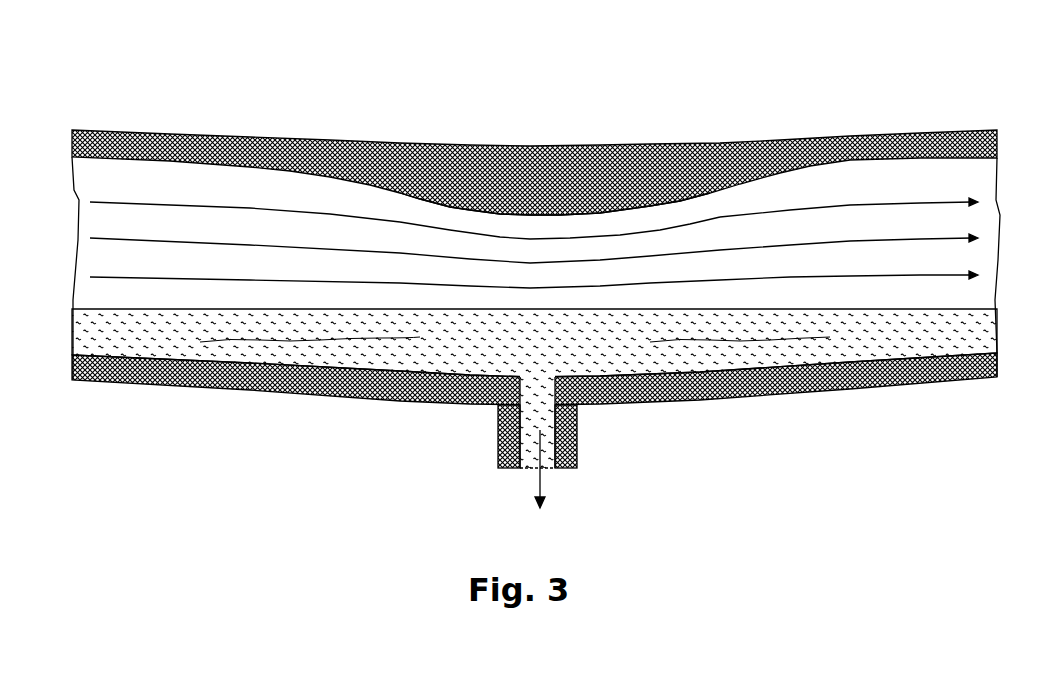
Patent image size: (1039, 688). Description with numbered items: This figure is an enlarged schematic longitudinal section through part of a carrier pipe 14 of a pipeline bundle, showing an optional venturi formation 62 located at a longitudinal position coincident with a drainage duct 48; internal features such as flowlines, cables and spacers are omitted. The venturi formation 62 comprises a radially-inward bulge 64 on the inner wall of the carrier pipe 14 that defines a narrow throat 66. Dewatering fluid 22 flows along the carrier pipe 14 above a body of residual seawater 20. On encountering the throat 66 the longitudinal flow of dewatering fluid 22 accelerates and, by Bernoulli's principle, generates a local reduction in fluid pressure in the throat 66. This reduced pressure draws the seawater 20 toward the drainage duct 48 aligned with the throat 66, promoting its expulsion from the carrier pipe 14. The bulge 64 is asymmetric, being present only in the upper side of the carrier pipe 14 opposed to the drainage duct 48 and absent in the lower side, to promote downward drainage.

The carrier pipe 14 is at (913, 137).
The residual seawater 20 is at (123, 340).
The dewatering fluid 22 is at (228, 208).
The drainage duct 48 is at (572, 442).
The venturi formation 62 is at (662, 109).
The radially-inward bulge 64 is at (547, 197).
The throat 66 is at (498, 230).